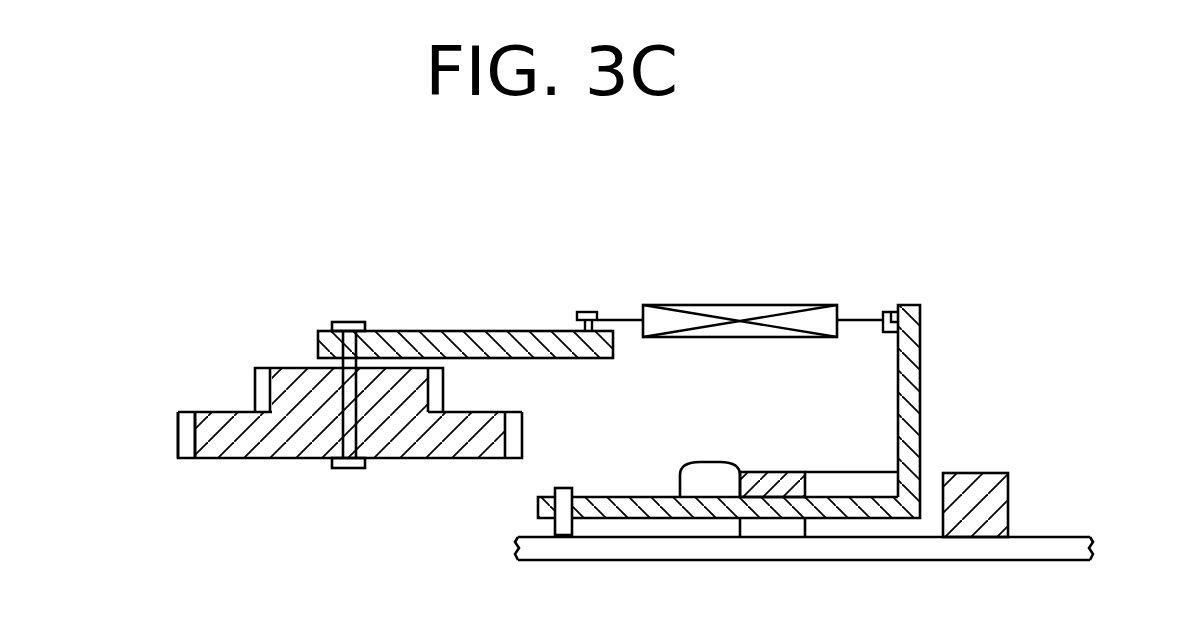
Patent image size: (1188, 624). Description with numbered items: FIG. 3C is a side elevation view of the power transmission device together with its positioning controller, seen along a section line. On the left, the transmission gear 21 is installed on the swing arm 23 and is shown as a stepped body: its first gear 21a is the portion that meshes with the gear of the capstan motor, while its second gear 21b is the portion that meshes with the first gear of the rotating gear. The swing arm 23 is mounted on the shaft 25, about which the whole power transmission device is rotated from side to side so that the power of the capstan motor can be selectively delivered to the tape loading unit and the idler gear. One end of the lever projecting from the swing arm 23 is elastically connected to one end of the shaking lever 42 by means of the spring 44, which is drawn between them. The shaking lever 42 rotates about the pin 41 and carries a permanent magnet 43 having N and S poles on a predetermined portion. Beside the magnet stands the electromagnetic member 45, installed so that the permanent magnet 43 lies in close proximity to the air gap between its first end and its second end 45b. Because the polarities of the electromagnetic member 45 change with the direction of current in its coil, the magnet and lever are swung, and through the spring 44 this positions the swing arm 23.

The transmission gear 21 is at (185, 460).
The first gear of the transmission gear 21a is at (257, 377).
The second gear of the transmission gear 21b is at (178, 430).
The swing arm 23 is at (488, 331).
The shaft 25 is at (343, 322).
The pin 41 is at (570, 490).
The shaking lever 42 is at (920, 328).
The permanent magnet 43 is at (708, 482).
The spring 44 is at (755, 307).
The electromagnetic member 45 is at (933, 472).
The second end of the electromagnetic member 45b is at (760, 468).